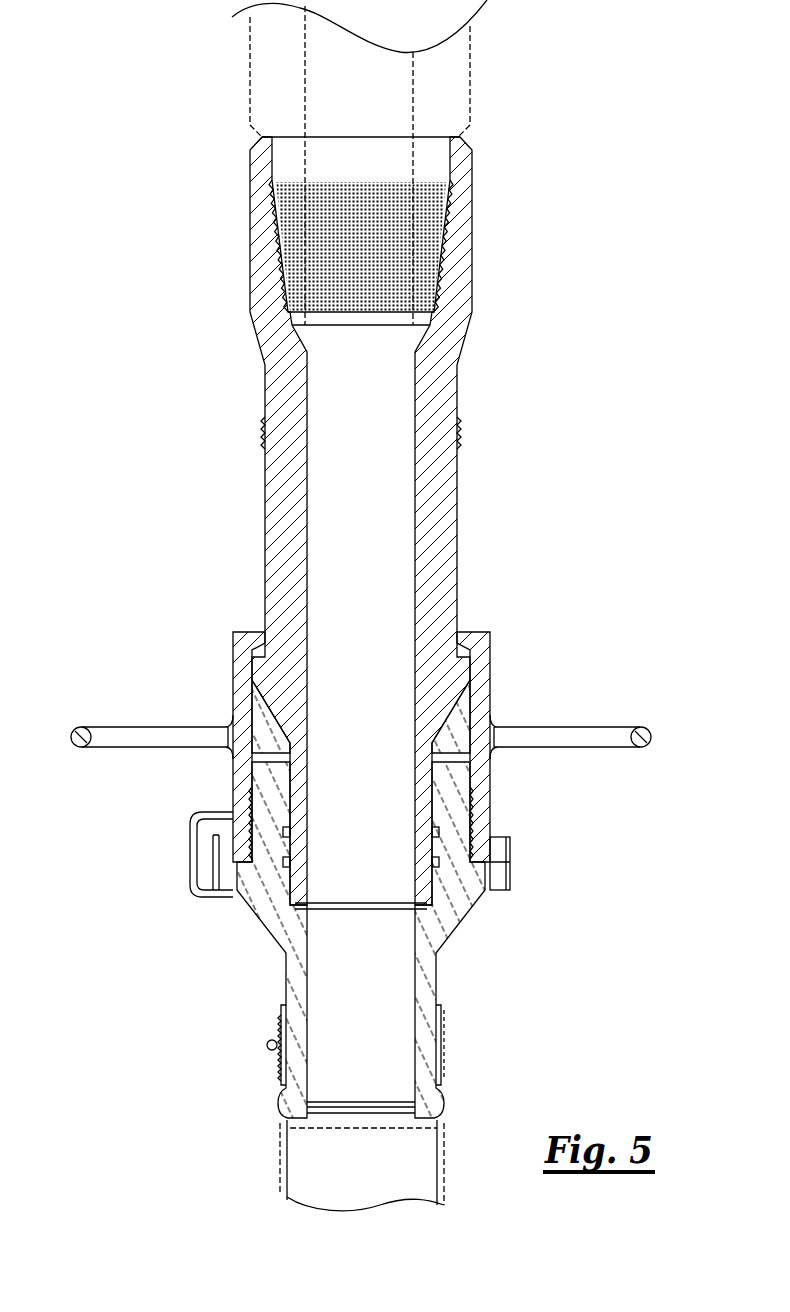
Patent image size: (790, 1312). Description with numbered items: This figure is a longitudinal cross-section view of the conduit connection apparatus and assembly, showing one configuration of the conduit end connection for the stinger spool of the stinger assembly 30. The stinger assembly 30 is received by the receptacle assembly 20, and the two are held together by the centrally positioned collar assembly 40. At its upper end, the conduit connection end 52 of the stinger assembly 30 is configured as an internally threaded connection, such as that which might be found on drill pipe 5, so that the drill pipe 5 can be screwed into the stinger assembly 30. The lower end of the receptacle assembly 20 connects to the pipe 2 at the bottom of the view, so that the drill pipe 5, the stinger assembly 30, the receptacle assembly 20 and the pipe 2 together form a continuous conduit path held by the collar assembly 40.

The pipe 2 is at (282, 1140).
The drill pipe 5 is at (456, 88).
The receptacle assembly 20 is at (456, 945).
The stinger assembly 30 is at (468, 507).
The collar assembly 40 is at (220, 700).
The conduit connection end 52 is at (268, 240).